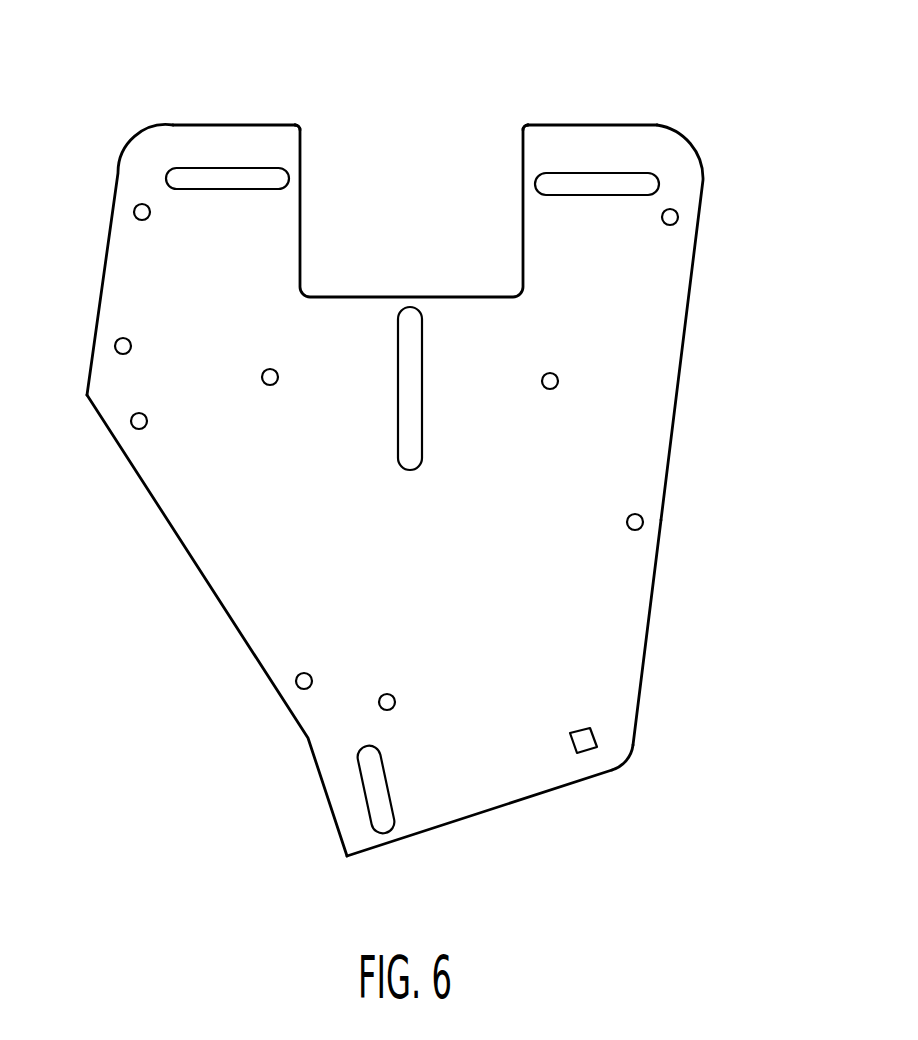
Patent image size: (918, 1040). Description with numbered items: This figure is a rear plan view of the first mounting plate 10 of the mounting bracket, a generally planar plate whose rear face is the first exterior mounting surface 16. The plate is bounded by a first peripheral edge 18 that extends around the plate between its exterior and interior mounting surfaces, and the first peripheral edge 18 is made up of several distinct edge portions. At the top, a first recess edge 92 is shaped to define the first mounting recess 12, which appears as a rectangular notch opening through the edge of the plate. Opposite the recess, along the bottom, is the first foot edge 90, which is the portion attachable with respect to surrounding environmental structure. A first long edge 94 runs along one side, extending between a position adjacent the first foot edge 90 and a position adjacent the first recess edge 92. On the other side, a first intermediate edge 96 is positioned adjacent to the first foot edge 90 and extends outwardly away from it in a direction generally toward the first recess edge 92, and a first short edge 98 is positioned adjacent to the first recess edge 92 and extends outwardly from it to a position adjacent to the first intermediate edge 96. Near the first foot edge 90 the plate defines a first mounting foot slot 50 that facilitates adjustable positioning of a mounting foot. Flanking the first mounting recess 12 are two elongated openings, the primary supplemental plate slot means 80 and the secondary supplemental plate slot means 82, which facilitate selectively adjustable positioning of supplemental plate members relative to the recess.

The first mounting plate 10 is at (518, 541).
The first mounting recess 12 is at (396, 233).
The first exterior mounting surface 16 is at (663, 353).
The first peripheral edge 18 is at (625, 762).
The first mounting foot slot 50 is at (373, 795).
The primary second supplemental plate slot means 80 is at (580, 180).
The secondary second supplemental plate slot means 82 is at (237, 178).
The first foot edge 90 is at (515, 807).
The first recess edge 92 is at (296, 122).
The first long edge 94 is at (672, 438).
The first intermediate edge 96 is at (205, 577).
The first short edge 98 is at (103, 270).